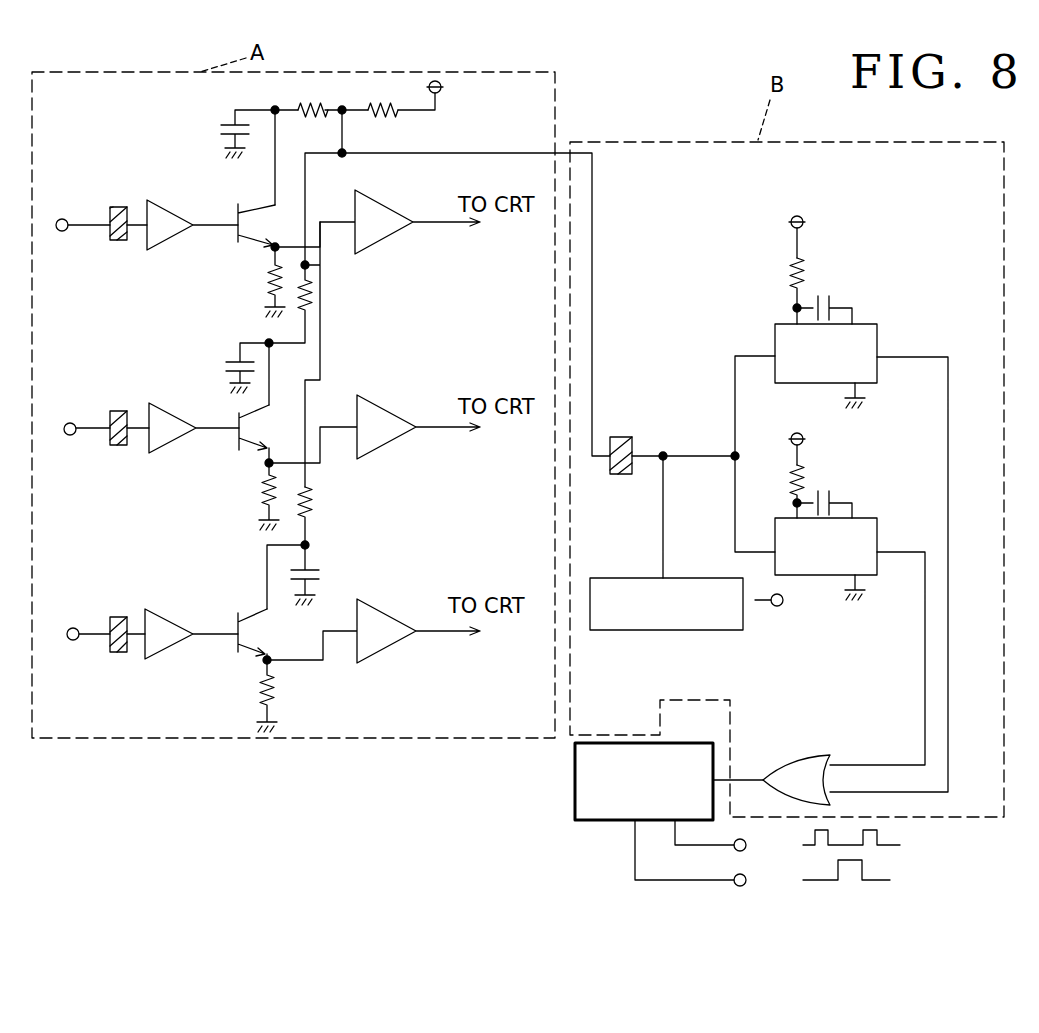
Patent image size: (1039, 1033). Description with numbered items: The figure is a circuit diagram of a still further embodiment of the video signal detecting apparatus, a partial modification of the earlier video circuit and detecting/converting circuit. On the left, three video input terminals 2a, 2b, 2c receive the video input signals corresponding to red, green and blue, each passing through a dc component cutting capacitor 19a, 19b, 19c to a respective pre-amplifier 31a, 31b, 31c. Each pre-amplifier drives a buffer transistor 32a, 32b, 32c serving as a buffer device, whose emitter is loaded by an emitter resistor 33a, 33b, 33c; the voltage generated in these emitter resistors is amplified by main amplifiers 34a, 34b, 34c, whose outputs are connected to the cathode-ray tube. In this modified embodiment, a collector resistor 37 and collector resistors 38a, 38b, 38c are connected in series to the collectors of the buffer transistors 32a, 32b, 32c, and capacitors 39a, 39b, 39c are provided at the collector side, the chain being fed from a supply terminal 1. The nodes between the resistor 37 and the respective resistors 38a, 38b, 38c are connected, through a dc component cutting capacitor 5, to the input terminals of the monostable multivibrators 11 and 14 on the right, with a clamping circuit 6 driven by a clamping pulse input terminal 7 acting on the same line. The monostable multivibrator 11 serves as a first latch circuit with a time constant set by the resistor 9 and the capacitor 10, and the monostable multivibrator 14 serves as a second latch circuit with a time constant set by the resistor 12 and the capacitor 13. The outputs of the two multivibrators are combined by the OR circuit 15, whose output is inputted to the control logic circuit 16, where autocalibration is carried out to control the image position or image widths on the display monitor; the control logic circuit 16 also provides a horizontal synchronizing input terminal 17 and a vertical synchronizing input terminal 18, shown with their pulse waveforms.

The power supply terminal 1 is at (443, 87).
The video input terminal 2a is at (62, 218).
The video input terminal 2b is at (70, 422).
The video input terminal 2c is at (70, 627).
The dc component cutting capacitor 19a is at (118, 205).
The dc component cutting capacitor 19b is at (118, 410).
The dc component cutting capacitor 19c is at (118, 615).
The pre-amplifier 31a is at (169, 205).
The pre-amplifier 31b is at (172, 408).
The pre-amplifier 31c is at (166, 607).
The buffer transistor 32a is at (258, 212).
The buffer transistor 32b is at (243, 428).
The buffer transistor 32c is at (255, 606).
The emitter resistor 33a is at (262, 272).
The emitter resistor 33b is at (262, 496).
The emitter resistor 33c is at (260, 683).
The main amplifier 34a is at (385, 197).
The main amplifier 34b is at (410, 383).
The main amplifier 34c is at (388, 610).
The collector resistor 37 is at (366, 107).
The collector resistor 38a is at (296, 107).
The collector resistor 38b is at (312, 297).
The collector resistor 38c is at (312, 505).
The capacitor 39a is at (228, 133).
The capacitor 39b is at (228, 358).
The capacitor 39c is at (318, 572).
The dc component cutting capacitor 5 is at (622, 435).
The clamping circuit 6 is at (664, 636).
The clamping pulse input terminal 7 is at (783, 601).
The resistor 9 is at (805, 268).
The capacitor 10 is at (832, 298).
The monostable multivibrator 11 is at (880, 328).
The resistor 12 is at (806, 482).
The capacitor 13 is at (835, 502).
The monostable multivibrator 14 is at (880, 524).
The OR circuit 15 is at (812, 755).
The control logic circuit 16 is at (680, 742).
The horizontal synchronizing input terminal 17 is at (746, 845).
The vertical synchronizing input terminal 18 is at (746, 880).